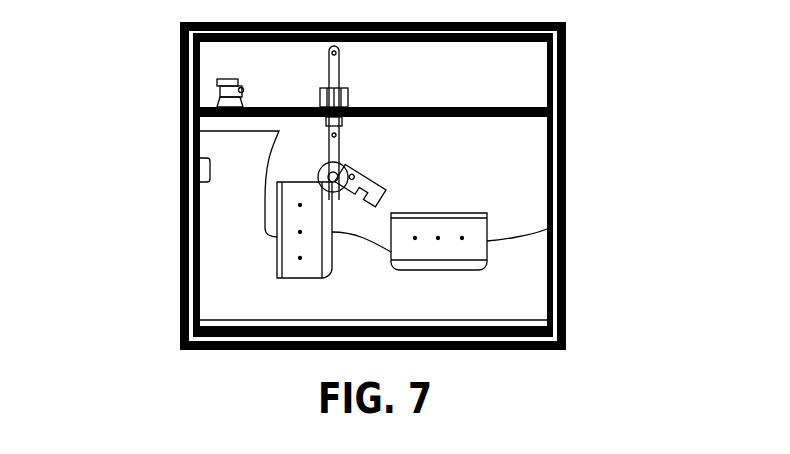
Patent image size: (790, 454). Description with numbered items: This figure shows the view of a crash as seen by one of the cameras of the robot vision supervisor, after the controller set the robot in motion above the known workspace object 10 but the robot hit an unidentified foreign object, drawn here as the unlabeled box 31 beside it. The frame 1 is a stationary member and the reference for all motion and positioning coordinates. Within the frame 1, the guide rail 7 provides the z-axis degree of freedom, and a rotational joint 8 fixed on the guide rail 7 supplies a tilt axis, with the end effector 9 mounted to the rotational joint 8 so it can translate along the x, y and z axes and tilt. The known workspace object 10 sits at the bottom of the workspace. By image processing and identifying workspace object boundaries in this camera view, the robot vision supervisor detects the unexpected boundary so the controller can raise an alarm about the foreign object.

The frame 1 is at (242, 218).
The guide rail 7 is at (339, 63).
The rotational joint 8 is at (318, 172).
The end effector 9 is at (385, 183).
The left container 31 is at (310, 217).
The known workspace object 10 is at (436, 260).